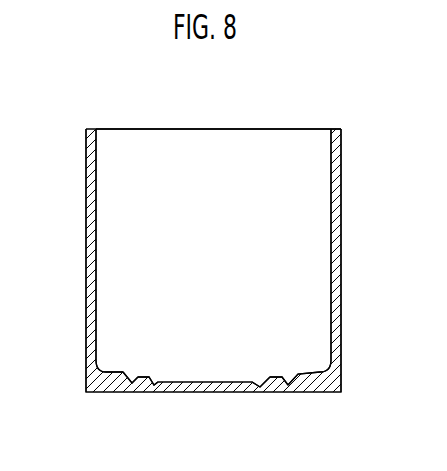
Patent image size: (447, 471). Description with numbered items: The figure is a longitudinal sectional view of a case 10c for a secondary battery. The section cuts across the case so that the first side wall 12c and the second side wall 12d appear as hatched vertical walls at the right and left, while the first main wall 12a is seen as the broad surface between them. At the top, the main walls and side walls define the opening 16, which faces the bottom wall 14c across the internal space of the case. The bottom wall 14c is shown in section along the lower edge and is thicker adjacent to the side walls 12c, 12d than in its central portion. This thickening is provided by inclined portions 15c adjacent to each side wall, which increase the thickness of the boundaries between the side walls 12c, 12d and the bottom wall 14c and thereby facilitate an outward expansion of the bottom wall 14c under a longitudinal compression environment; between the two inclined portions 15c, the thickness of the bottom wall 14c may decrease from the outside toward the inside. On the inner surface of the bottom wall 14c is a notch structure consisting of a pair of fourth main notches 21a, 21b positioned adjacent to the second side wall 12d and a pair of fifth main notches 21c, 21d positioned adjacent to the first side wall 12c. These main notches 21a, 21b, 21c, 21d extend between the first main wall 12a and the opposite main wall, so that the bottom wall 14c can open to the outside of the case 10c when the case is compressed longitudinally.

The case 10c is at (63, 95).
The first main wall 12a is at (173, 143).
The first side wall 12c is at (341, 249).
The second side wall 12d is at (86, 256).
The bottom wall 14c is at (306, 392).
The inclined portions 15c is at (93, 392).
The opening 16 is at (238, 129).
The fourth main notch 21a is at (117, 392).
The fourth main notch 21b is at (147, 392).
The fifth main notch 21c is at (253, 392).
The fifth main notch 21d is at (275, 392).